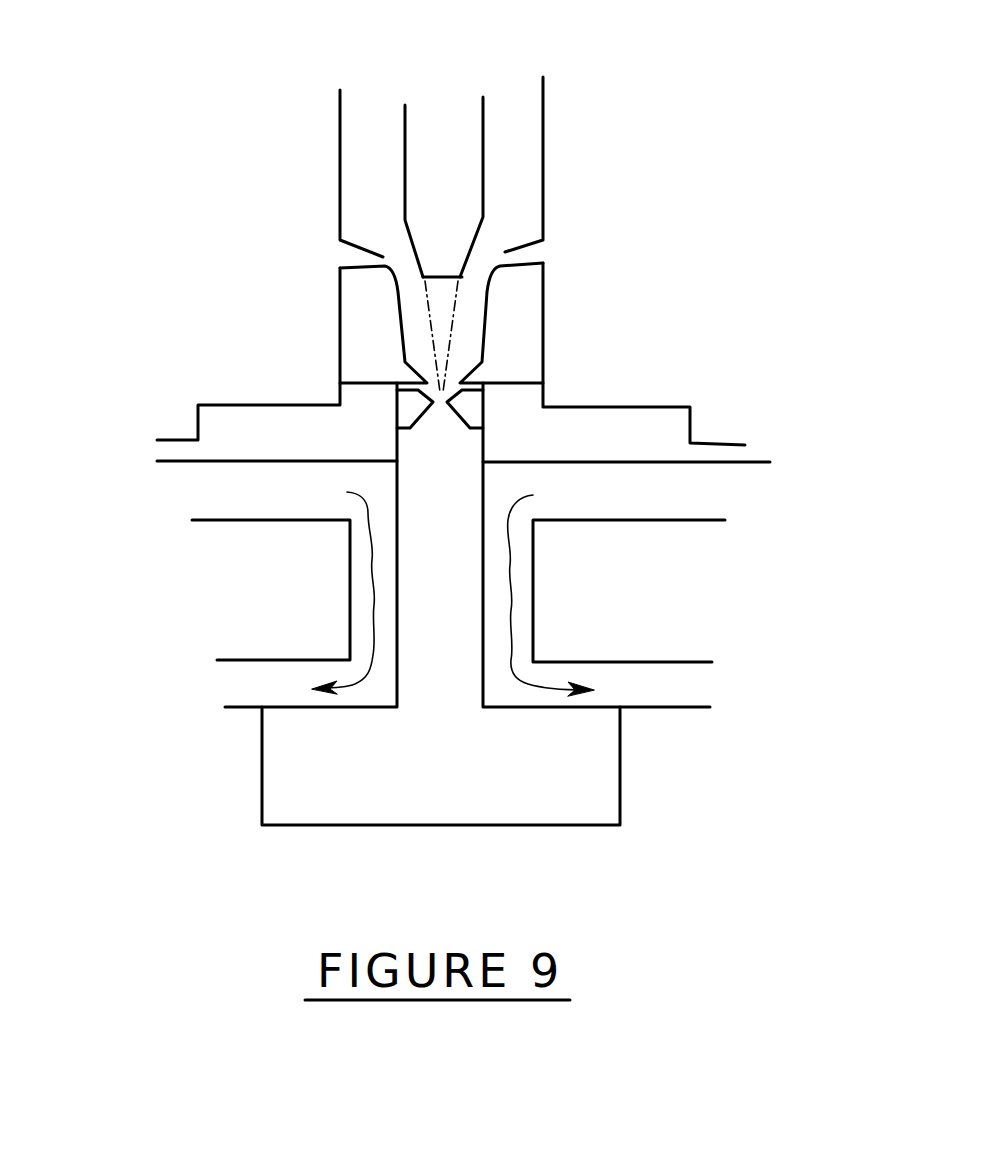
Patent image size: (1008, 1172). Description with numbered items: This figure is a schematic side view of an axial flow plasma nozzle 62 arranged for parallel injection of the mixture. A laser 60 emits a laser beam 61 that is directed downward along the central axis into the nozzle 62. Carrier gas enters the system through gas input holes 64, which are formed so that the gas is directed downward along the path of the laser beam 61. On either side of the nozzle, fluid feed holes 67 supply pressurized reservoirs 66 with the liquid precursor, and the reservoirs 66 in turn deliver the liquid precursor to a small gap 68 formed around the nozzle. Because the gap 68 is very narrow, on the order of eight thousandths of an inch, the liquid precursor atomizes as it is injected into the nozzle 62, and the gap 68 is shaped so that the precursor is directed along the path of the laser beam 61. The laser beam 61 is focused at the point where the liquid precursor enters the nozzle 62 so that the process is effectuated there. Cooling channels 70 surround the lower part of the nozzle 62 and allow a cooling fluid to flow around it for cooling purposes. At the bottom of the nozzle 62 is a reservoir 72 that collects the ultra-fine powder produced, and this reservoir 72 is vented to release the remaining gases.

The laser 60 is at (442, 122).
The laser beam 61 is at (442, 300).
The axial flow plasma nozzle 62 is at (543, 133).
The gas input holes 64 is at (348, 257).
The pressurized reservoirs 66 is at (463, 362).
The fluid feed holes 67 is at (158, 448).
The gap 68 is at (420, 391).
The cooling channels 70 is at (347, 492).
The reservoir 72 is at (441, 766).